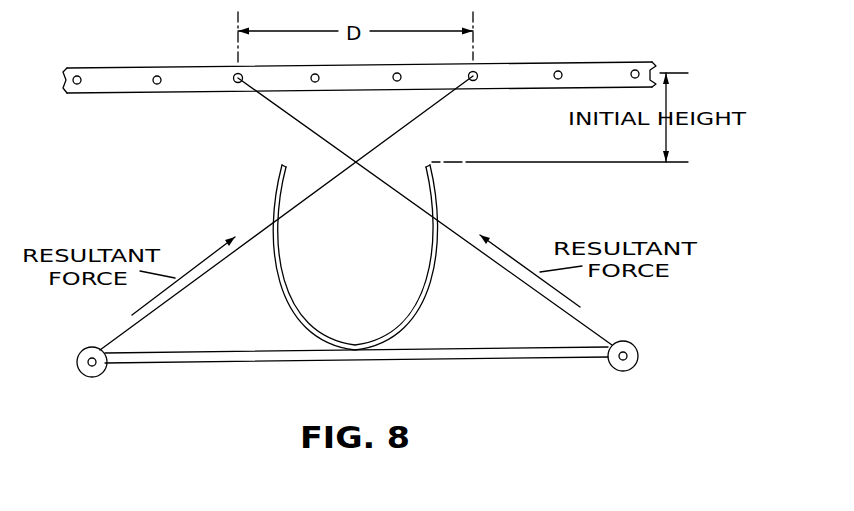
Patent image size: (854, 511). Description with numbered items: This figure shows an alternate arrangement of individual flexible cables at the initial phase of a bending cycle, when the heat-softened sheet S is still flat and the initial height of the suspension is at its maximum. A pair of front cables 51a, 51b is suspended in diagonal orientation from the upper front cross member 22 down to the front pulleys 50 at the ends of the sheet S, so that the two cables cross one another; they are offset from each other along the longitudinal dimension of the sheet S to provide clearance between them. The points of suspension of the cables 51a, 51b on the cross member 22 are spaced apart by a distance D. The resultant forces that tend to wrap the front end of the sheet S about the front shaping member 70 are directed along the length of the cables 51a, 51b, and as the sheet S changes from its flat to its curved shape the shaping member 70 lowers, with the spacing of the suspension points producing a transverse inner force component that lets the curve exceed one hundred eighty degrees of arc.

The upper front cross member 22 is at (503, 68).
The front pulleys 50 is at (82, 372).
The front cable 51a is at (456, 233).
The front cable 51b is at (257, 238).
The front shaping member 70 is at (280, 321).
The sheet S is at (442, 354).